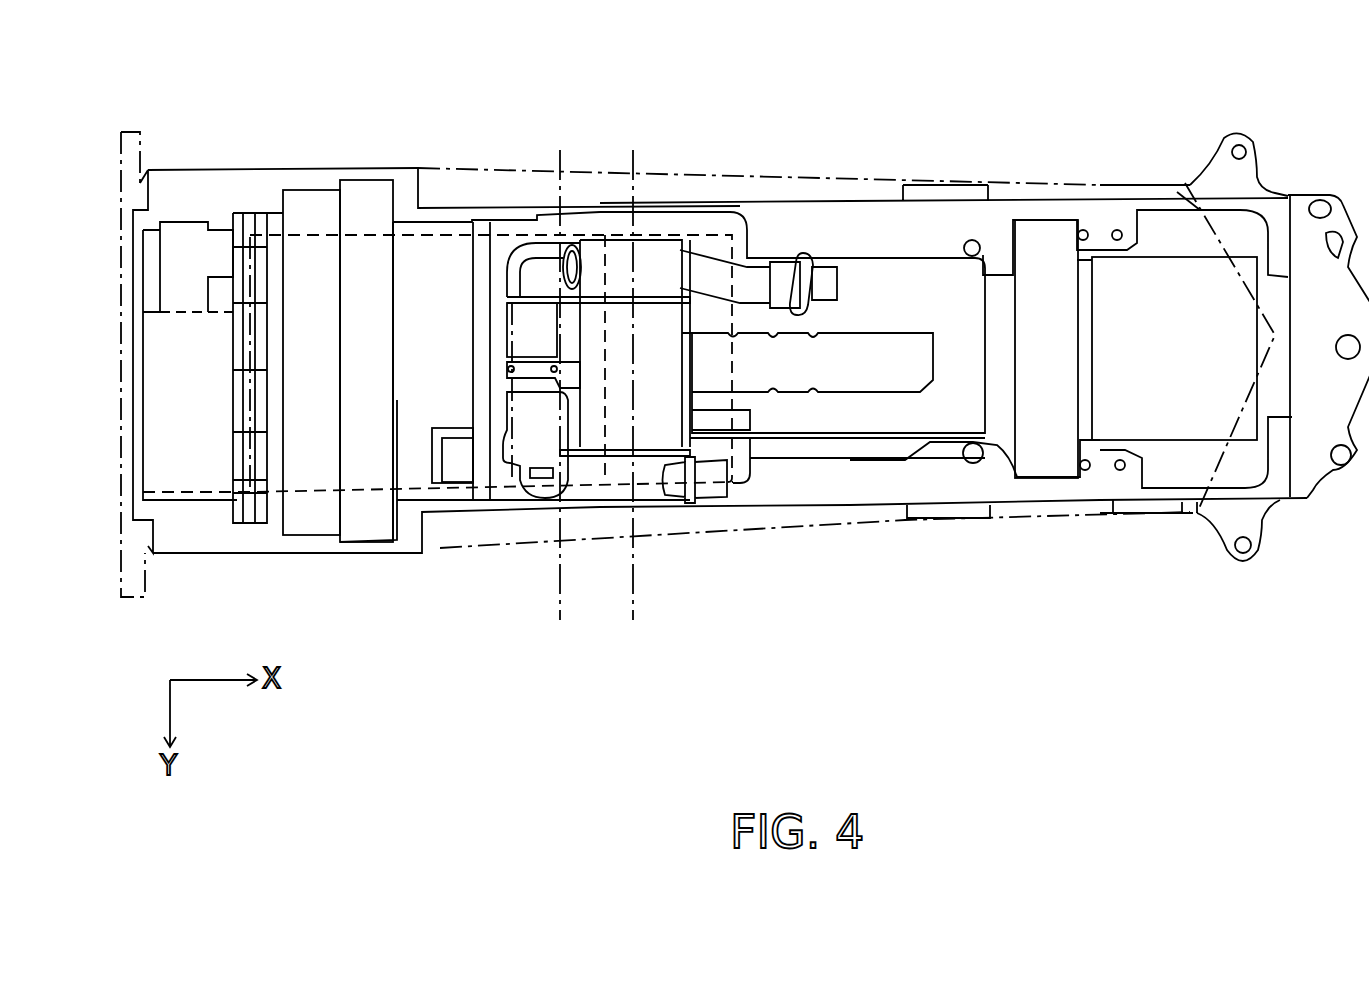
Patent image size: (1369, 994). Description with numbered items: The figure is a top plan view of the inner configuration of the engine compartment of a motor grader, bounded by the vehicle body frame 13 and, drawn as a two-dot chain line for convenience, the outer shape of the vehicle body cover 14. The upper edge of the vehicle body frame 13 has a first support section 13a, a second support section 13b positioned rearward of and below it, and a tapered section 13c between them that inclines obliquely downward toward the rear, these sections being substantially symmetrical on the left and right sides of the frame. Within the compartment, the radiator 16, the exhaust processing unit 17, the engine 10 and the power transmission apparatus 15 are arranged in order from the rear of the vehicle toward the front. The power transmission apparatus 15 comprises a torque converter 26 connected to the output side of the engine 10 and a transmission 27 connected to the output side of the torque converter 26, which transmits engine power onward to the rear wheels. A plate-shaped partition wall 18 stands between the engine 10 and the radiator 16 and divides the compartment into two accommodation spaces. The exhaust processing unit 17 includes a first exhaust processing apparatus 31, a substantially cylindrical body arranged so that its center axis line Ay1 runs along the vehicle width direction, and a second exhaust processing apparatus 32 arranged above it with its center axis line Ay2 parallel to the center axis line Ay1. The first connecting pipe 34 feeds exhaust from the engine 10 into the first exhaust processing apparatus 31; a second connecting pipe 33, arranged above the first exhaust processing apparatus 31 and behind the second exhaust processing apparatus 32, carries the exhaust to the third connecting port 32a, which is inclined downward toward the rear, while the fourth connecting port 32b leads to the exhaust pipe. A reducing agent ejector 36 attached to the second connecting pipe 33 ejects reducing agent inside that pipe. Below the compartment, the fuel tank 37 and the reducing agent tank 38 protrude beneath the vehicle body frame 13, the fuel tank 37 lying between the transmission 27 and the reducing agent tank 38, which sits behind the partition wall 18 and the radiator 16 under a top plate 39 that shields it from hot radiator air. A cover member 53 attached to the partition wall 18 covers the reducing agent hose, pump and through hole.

The engine 10 is at (872, 272).
The vehicle body frame 13 is at (1267, 530).
The first support section 13a is at (953, 222).
The second support section 13b is at (312, 175).
The tapered section 13c is at (450, 213).
The vehicle body cover 14 is at (850, 567).
The power transmission apparatus 15 is at (1188, 75).
The radiator 16 is at (363, 200).
The exhaust processing unit 17 is at (593, 507).
The partition wall 18 is at (485, 488).
The torque converter 26 is at (1033, 307).
The transmission 27 is at (1193, 323).
The first exhaust processing apparatus 31 is at (573, 233).
The second exhaust processing apparatus 32 is at (660, 253).
The third connecting port 32a is at (608, 252).
The fourth connecting port 32b is at (677, 480).
The second connecting pipe 33 is at (530, 262).
The first connecting pipe 34 is at (757, 268).
The reducing agent ejector 36 is at (533, 470).
The fuel tank 37 is at (370, 490).
The reducing agent tank 38 is at (180, 313).
The top plate 39 is at (197, 245).
The cover member 53 is at (455, 470).
The center axis line Ay1 is at (576, 402).
The center axis line Ay2 is at (656, 402).